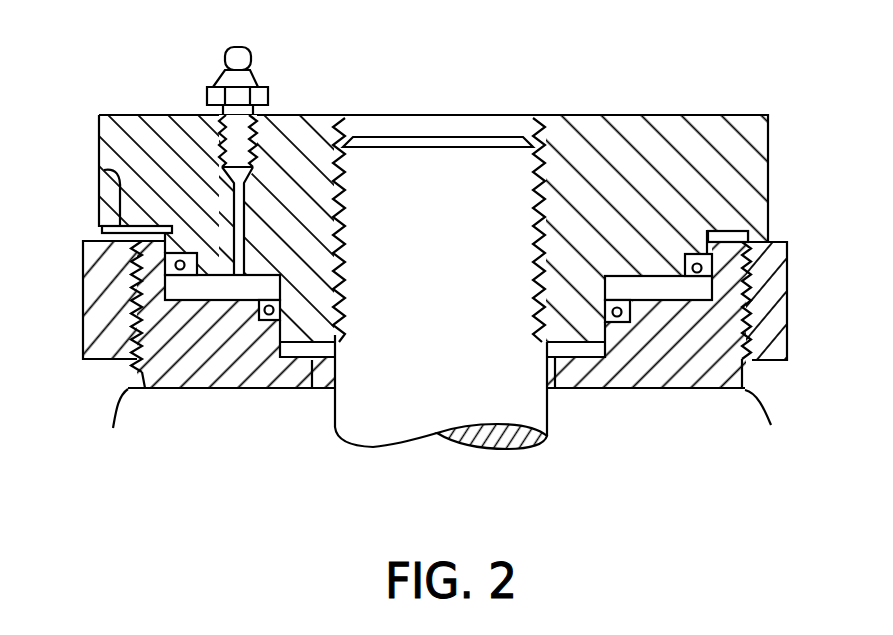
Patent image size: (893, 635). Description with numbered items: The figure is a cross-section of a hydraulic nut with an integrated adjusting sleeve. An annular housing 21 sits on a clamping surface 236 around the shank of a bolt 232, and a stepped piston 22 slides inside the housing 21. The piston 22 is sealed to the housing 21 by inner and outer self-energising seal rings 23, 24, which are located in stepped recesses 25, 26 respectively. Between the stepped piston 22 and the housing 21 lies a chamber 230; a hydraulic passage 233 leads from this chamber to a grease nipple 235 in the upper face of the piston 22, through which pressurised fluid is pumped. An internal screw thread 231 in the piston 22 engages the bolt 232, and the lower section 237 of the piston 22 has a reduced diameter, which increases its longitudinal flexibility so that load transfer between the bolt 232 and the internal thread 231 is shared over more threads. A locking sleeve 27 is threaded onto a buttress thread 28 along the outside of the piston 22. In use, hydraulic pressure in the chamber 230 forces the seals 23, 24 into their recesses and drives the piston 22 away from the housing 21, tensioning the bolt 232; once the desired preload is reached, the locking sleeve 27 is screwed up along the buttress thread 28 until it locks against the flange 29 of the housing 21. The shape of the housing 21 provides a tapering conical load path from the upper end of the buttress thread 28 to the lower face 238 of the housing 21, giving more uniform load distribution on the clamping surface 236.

The annular housing 21 is at (442, 334).
The stepped piston 22 is at (433, 236).
The inner self-energising seal ring 23 is at (633, 316).
The outer self-energising seal ring 24 is at (685, 264).
The stepped recess 25 is at (623, 318).
The stepped recess 26 is at (702, 252).
The locking sleeve 27 is at (121, 346).
The buttress thread 28 is at (738, 342).
The flange 29 is at (104, 170).
The chamber 230 is at (229, 290).
The internal screw thread 231 is at (347, 193).
The bolt 232 is at (440, 230).
The hydraulic passage 233 is at (248, 234).
The grease nipple 235 is at (257, 72).
The clamping surface 236 is at (745, 390).
The lower section of the piston 237 is at (345, 321).
The lower face of the housing 238 is at (292, 377).